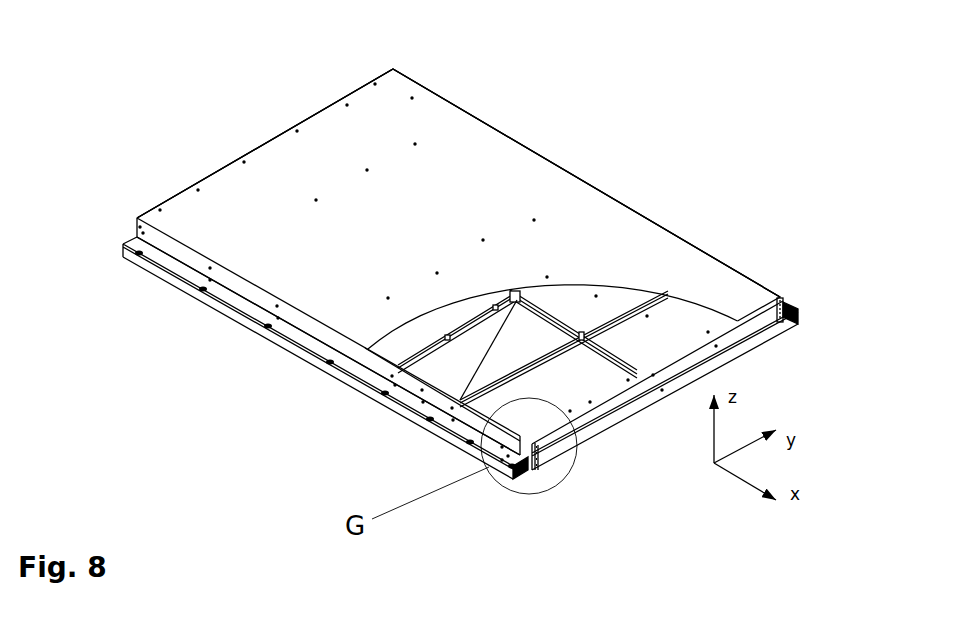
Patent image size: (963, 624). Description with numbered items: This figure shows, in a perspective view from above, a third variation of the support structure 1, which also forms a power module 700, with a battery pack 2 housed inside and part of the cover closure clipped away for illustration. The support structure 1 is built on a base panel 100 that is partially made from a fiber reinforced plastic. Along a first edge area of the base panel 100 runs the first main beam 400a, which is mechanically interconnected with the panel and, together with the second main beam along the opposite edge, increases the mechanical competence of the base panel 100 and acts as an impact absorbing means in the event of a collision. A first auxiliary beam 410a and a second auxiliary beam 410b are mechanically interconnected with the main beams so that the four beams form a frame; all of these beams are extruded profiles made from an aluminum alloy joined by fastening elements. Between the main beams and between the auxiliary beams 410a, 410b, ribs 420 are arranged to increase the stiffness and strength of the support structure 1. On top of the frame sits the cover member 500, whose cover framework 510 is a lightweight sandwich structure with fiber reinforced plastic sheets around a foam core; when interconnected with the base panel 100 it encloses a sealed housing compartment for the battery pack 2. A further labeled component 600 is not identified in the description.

The support structure 1 is at (170, 167).
The battery pack 2 is at (513, 342).
The base panel 100 is at (215, 315).
The first main beam 400a is at (613, 417).
The first auxiliary beam 410a is at (375, 378).
The second auxiliary beam 410b is at (782, 297).
The ribs 420 is at (488, 392).
The cover member 500 is at (582, 158).
The cover framework 510 is at (578, 240).
The support frame 600 is at (446, 338).
The power module 700 is at (262, 42).